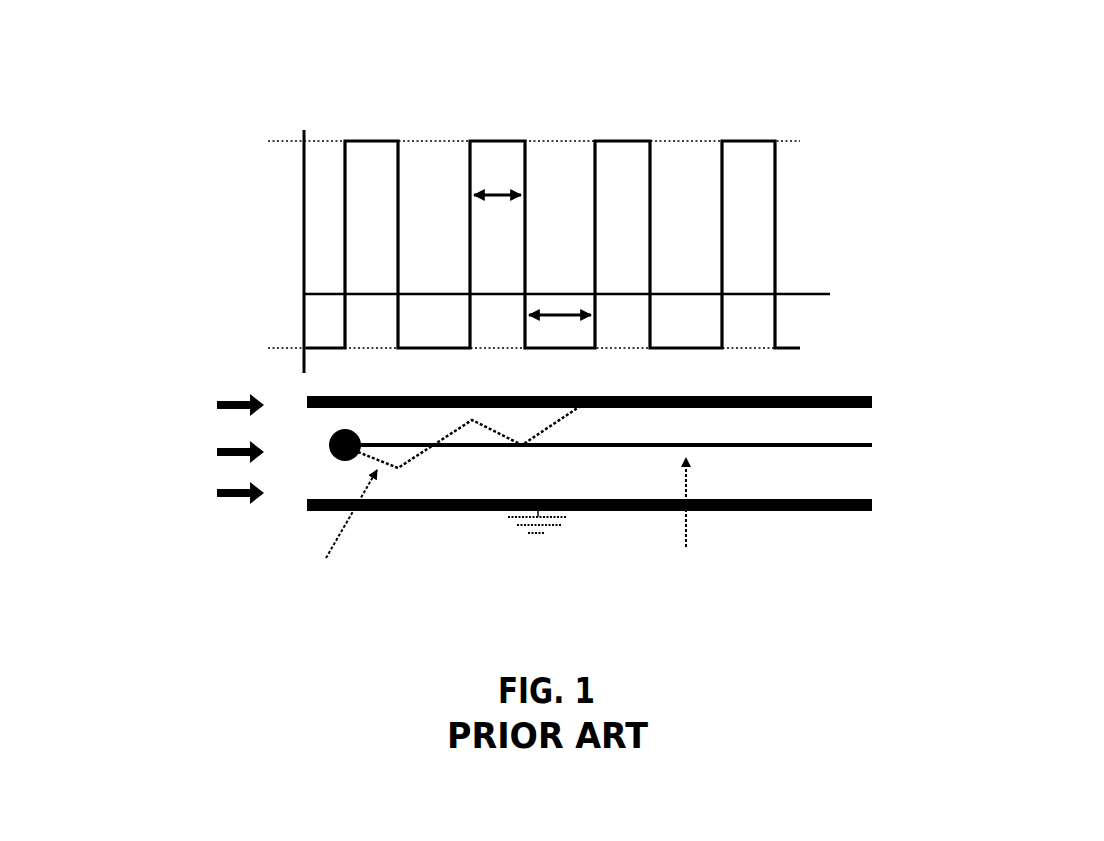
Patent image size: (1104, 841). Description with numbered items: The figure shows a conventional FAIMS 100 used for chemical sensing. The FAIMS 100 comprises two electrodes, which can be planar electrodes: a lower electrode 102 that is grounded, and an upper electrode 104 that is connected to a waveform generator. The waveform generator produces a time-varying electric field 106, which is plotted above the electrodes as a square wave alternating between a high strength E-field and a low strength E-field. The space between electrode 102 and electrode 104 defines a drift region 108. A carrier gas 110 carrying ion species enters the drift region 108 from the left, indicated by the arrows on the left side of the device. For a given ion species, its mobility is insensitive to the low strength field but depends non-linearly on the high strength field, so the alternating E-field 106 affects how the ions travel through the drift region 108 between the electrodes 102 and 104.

The FAIMS 100 is at (633, 29).
The electrode 102 is at (853, 510).
The electrode 104 is at (853, 395).
The time-varying electric field 106 is at (771, 131).
The drift region 108 is at (805, 467).
The carrier gas 110 is at (162, 449).